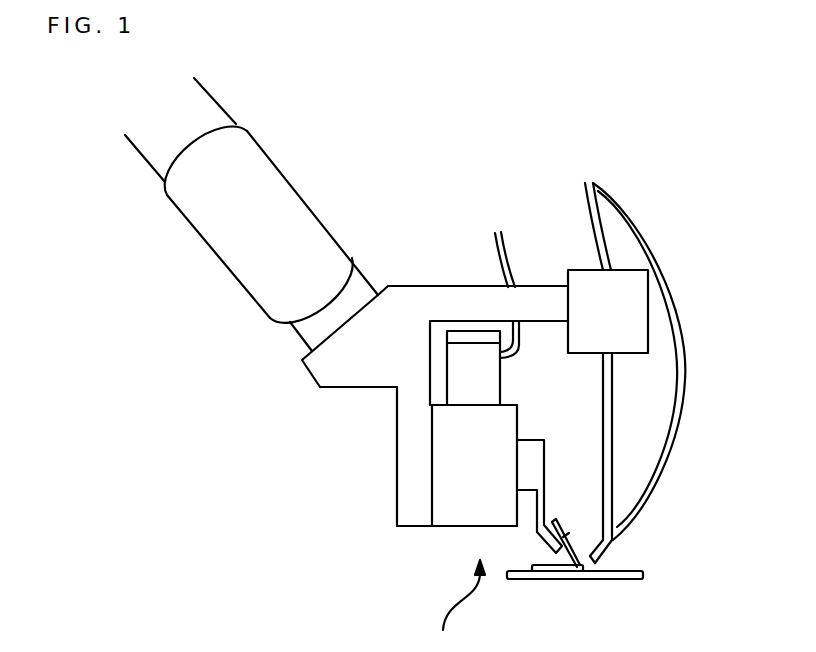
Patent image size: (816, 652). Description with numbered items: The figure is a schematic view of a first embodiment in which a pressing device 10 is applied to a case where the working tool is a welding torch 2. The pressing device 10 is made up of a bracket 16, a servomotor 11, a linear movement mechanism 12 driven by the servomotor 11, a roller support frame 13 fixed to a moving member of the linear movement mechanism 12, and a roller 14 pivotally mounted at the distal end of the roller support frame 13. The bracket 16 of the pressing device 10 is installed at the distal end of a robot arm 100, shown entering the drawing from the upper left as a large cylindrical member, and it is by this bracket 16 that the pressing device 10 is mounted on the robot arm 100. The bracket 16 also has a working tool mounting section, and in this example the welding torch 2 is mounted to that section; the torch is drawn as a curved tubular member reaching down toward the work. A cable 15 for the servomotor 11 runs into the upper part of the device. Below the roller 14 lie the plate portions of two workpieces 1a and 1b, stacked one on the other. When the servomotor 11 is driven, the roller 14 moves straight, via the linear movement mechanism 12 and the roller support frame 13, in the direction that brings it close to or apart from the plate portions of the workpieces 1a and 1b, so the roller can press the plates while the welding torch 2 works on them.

The robot arm 100 is at (283, 158).
The bracket 16 is at (318, 373).
The linear movement mechanism 12 is at (448, 523).
The servomotor 11 is at (498, 367).
The cable 15 is at (497, 244).
The roller support frame 13 is at (552, 455).
The roller 14 is at (565, 535).
The welding torch 2 is at (617, 543).
The workpiece 1b is at (555, 582).
The workpiece 1a is at (620, 582).
The pressing device 10 is at (458, 606).